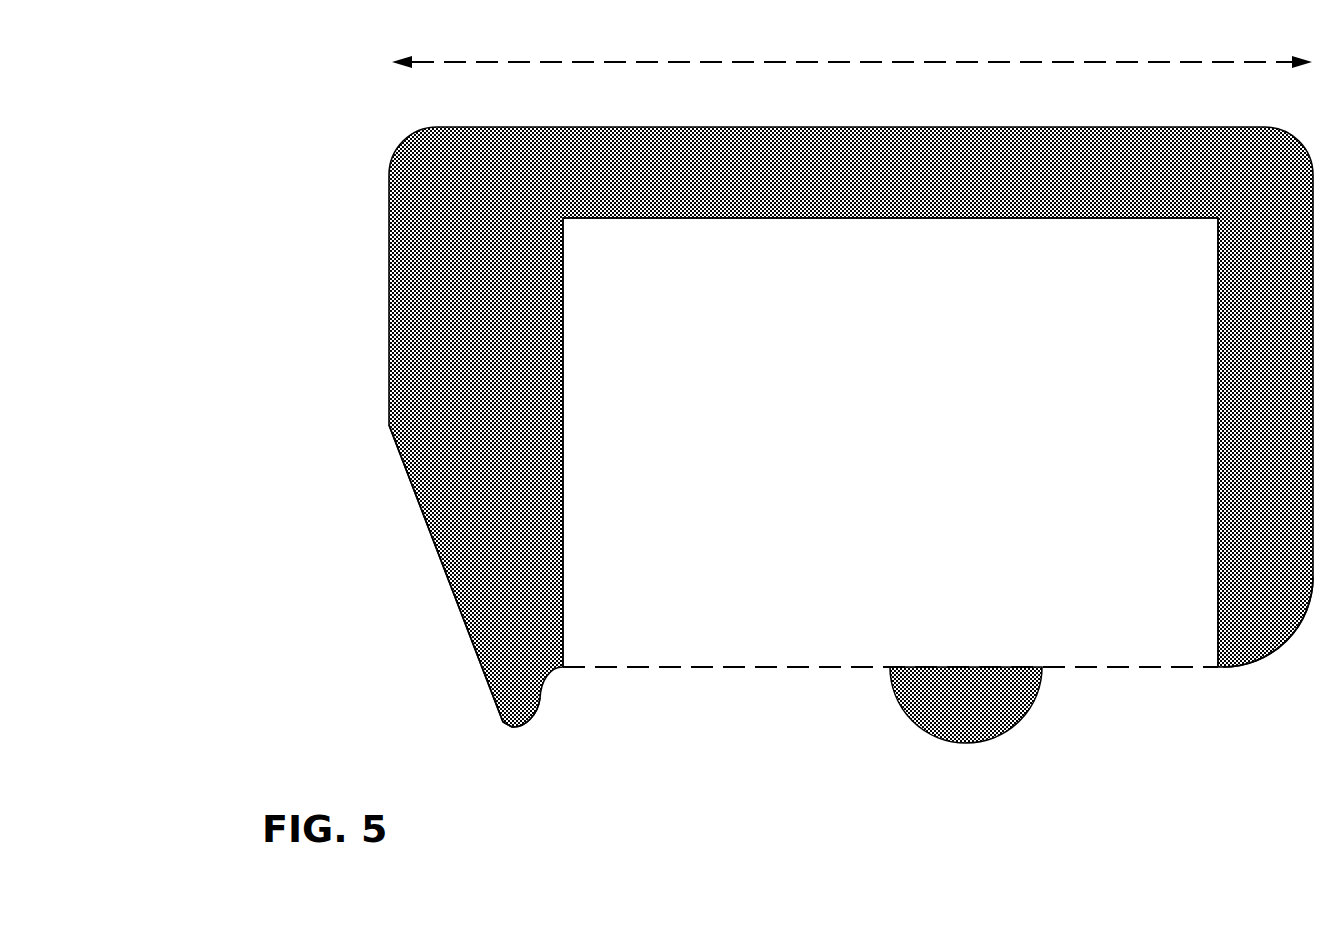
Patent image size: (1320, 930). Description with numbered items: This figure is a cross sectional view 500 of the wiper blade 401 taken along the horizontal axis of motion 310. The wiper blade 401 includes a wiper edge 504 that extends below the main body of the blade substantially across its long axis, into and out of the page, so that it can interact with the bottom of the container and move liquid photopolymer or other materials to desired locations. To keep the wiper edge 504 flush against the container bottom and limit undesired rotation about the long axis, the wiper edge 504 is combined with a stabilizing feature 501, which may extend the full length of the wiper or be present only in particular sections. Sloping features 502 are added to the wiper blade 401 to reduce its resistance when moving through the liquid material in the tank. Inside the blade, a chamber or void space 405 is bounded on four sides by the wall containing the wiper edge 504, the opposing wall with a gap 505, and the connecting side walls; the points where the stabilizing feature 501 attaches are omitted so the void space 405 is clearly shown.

The cross sectional view 500 is at (262, 48).
The horizontal axis of motion 310 is at (852, 48).
The wiper blade 401 is at (851, 427).
The void space 405 is at (757, 545).
The stabilizing feature 501 is at (938, 718).
The sloping feature 502 is at (418, 535).
The wiper edge 504 is at (503, 725).
The gap 505 is at (1271, 692).